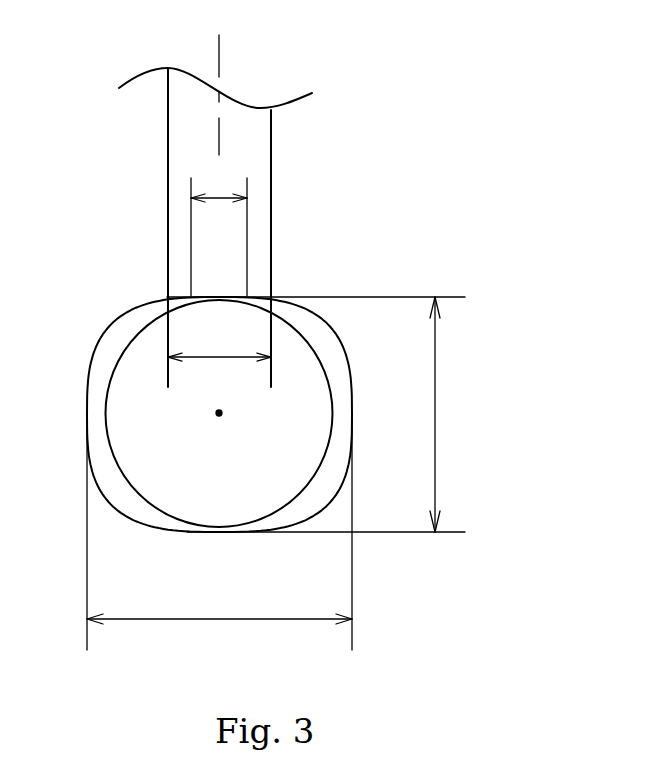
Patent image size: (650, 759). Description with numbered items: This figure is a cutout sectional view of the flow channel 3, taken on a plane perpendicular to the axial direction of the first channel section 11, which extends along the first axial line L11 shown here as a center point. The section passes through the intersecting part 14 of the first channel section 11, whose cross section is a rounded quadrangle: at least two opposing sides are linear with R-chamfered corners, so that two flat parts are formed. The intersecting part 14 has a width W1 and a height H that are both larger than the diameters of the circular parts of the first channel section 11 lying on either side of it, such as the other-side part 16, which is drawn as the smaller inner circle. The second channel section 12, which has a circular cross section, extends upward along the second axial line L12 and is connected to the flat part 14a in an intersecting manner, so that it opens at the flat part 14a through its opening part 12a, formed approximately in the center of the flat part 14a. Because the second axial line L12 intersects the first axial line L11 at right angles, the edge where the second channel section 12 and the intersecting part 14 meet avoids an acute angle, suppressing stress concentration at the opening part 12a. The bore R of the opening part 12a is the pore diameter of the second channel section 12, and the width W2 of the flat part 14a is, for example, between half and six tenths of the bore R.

The flow channel 3 is at (226, 326).
The first channel section 11 is at (226, 440).
The second channel section 12 is at (271, 146).
The opening part 12a is at (213, 295).
The intersecting part 14 is at (322, 500).
The flat part 14a is at (250, 298).
The other-side part 16 is at (107, 420).
The first axial line L11 is at (219, 413).
The second axial line L12 is at (220, 85).
The bore of the opening part R is at (215, 360).
The height of the cross section of the intersecting part H is at (436, 410).
The width of the cross section of the intersecting part W1 is at (217, 620).
The width of the flat part W2 is at (220, 195).